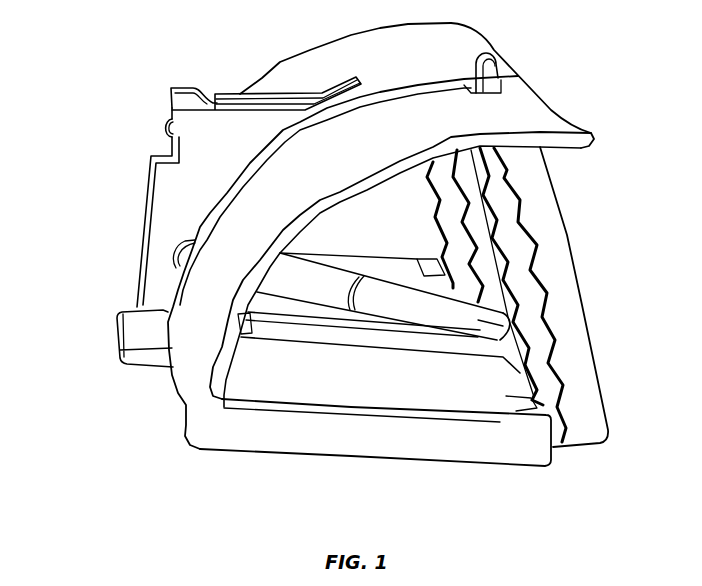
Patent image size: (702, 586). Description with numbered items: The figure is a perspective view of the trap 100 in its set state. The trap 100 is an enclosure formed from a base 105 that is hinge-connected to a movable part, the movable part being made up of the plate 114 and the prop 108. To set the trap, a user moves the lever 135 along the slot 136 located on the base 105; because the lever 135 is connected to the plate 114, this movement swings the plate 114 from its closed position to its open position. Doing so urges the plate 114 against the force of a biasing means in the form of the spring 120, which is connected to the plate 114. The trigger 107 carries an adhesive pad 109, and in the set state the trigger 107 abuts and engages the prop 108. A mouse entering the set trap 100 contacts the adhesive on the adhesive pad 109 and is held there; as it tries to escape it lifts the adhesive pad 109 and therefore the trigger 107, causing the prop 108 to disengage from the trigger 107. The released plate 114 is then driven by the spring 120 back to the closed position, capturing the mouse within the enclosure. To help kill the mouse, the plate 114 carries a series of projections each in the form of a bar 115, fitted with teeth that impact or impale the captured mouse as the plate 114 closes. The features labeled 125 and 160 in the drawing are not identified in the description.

The trap 100 is at (122, 55).
The base 105 is at (481, 448).
The trigger 107 is at (184, 89).
The prop 108 is at (266, 107).
The adhesive pad 109 is at (333, 325).
The plate 114 is at (593, 253).
The bar 115 is at (497, 207).
The spring 120 is at (486, 318).
The panel 125 is at (552, 320).
The lever 135 is at (488, 67).
The slot 136 is at (220, 210).
The rib 160 is at (447, 221).